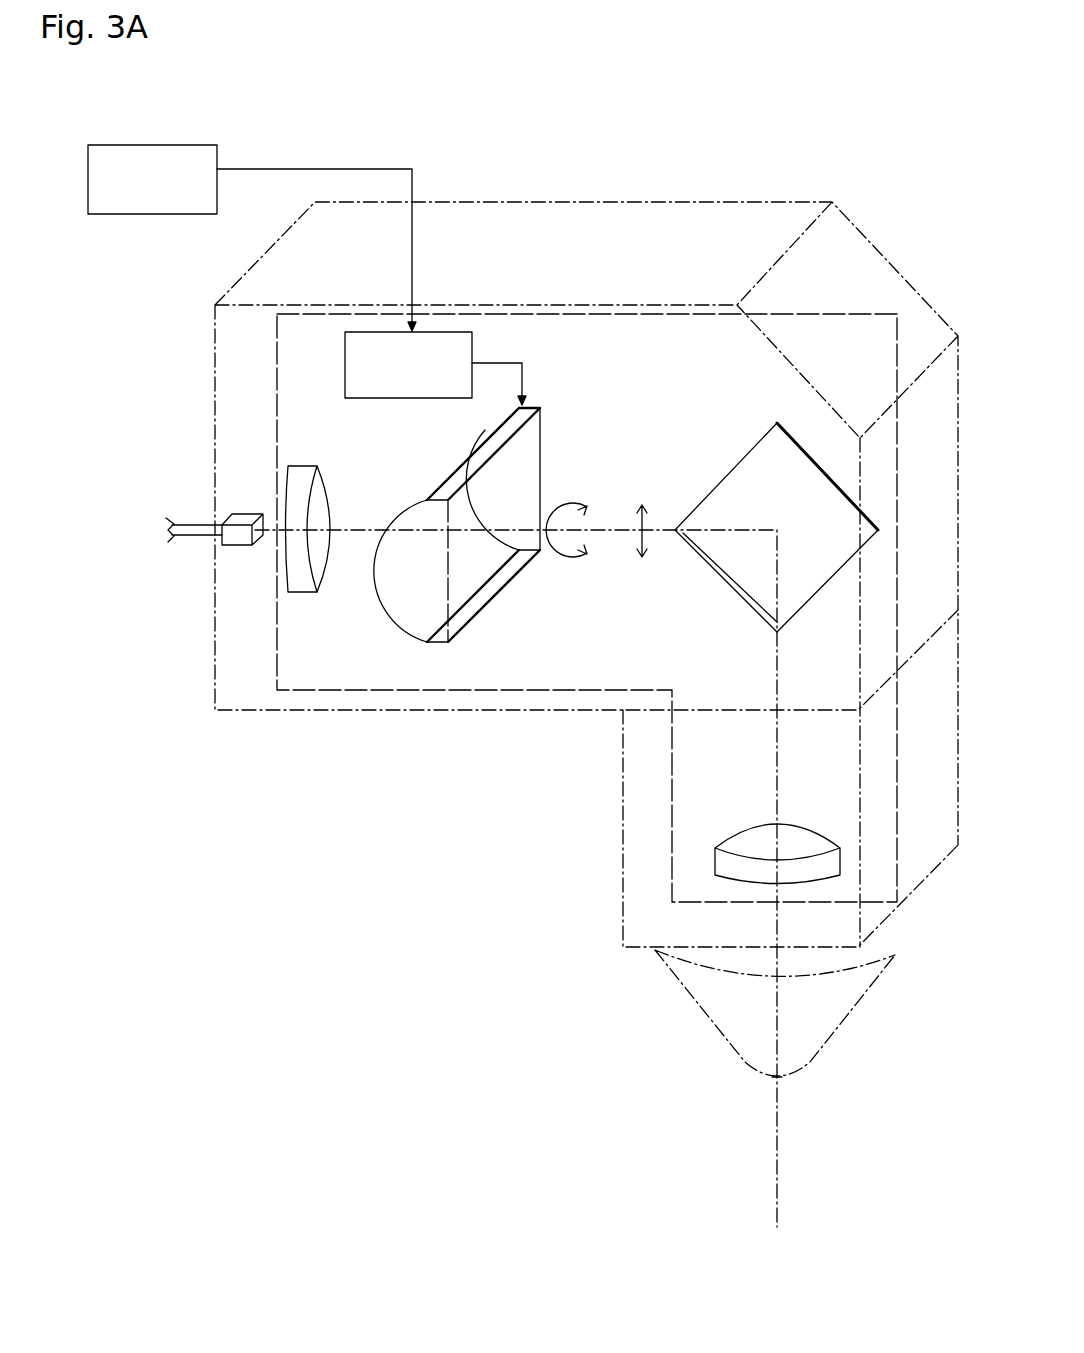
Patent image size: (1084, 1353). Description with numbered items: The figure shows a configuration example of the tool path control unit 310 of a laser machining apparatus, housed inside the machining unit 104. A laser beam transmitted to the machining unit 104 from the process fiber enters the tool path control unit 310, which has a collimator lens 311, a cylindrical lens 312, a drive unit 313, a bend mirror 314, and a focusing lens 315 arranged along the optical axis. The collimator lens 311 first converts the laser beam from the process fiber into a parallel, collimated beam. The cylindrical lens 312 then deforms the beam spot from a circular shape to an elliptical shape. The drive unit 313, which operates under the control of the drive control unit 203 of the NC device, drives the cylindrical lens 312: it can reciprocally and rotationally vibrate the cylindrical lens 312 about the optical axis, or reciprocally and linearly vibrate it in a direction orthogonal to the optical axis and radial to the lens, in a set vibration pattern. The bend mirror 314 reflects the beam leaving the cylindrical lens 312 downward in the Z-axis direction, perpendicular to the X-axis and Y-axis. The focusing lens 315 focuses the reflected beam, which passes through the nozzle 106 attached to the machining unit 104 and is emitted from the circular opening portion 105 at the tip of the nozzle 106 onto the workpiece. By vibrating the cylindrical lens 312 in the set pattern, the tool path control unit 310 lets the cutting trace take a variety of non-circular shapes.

The drive control unit 203 is at (158, 145).
The machining unit 104 is at (762, 248).
The tool path control unit 310 is at (404, 692).
The drive unit 313 is at (410, 402).
The collimator lens 311 is at (306, 463).
The cylindrical lens 312 is at (396, 614).
The bend mirror 314 is at (768, 455).
The focusing lens 315 is at (820, 826).
The nozzle 106 is at (866, 1008).
The opening portion 105 is at (786, 1080).